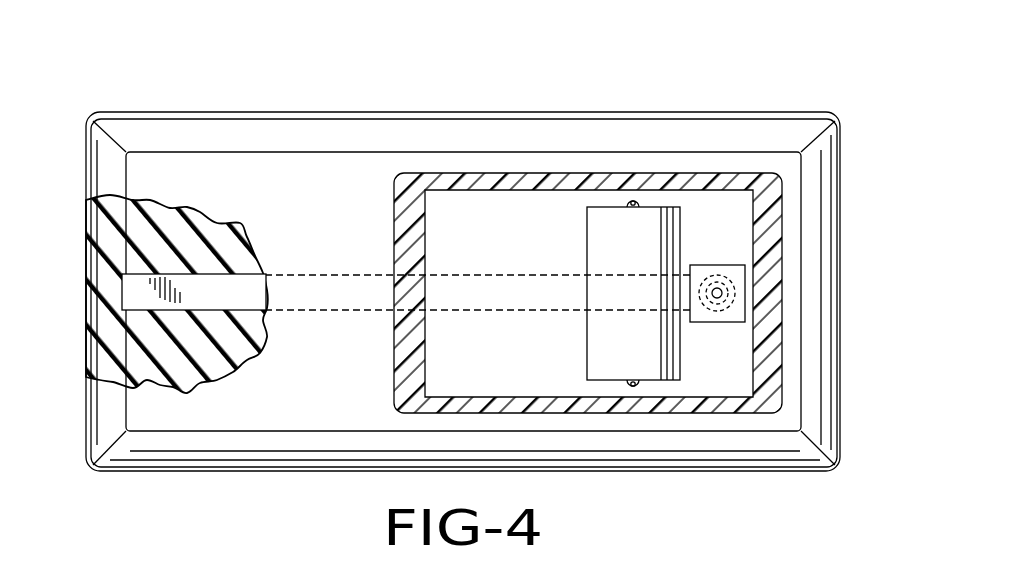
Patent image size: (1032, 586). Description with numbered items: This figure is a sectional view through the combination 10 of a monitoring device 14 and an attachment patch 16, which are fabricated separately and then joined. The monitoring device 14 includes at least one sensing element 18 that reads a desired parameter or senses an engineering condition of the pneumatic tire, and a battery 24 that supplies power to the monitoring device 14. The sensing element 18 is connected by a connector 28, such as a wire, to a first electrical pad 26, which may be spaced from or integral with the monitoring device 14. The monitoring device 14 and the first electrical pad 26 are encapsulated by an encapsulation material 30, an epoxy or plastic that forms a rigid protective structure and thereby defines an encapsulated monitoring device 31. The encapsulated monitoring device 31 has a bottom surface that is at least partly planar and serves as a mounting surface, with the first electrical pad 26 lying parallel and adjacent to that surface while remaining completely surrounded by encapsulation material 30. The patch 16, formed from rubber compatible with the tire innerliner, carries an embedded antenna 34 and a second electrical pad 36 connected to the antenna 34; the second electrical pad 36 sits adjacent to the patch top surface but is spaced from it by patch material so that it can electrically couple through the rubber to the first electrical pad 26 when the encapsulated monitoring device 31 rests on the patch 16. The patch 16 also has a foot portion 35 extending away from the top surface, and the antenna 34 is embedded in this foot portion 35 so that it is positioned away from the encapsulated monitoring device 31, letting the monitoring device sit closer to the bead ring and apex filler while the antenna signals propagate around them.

The combination 10 is at (289, 72).
The monitoring device 14 is at (746, 241).
The attachment patch 16 is at (221, 474).
The sensing element 18 is at (746, 279).
The battery 24 is at (650, 355).
The first electrical pad 26 is at (770, 340).
The connector 28 is at (712, 308).
The encapsulation material 30 is at (712, 413).
The encapsulated monitoring device 31 is at (632, 417).
The antenna 34 is at (147, 295).
The foot portion 35 is at (410, 112).
The second electrical pad 36 is at (750, 300).